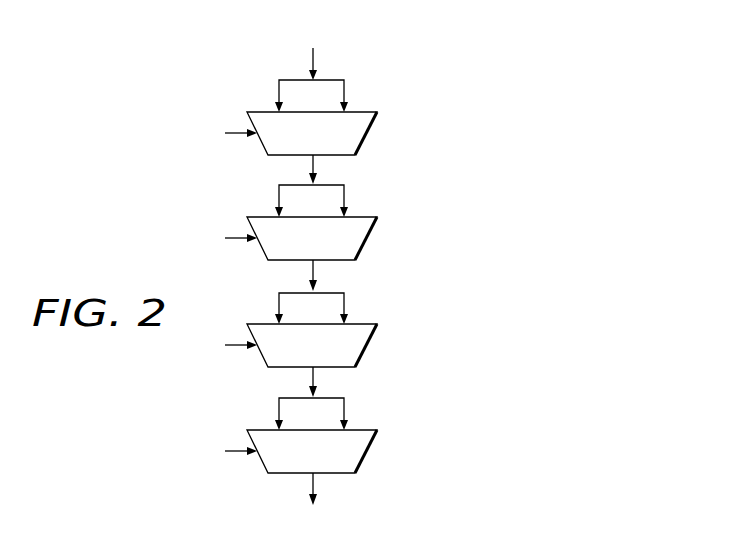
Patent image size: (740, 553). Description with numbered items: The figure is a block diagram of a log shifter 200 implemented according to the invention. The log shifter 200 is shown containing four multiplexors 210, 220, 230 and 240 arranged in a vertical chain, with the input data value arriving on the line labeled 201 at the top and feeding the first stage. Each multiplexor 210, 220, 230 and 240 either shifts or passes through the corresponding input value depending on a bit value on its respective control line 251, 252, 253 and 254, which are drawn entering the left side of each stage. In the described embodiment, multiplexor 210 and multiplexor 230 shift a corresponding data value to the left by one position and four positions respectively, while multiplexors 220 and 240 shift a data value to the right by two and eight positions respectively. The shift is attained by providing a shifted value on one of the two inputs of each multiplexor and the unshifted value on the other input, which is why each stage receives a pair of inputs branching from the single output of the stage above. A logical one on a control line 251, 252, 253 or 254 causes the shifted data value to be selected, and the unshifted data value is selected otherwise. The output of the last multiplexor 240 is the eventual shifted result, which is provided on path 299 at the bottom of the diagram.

The log shifter 200 is at (247, 54).
The input signal 201 is at (313, 58).
The multiplexor 210 is at (368, 133).
The multiplexor 220 is at (368, 238).
The multiplexor 230 is at (368, 345).
The multiplexor 240 is at (368, 451).
The control line 251 is at (235, 133).
The control line 252 is at (235, 238).
The control line 253 is at (235, 345).
The control line 254 is at (235, 451).
The path 299 is at (313, 483).